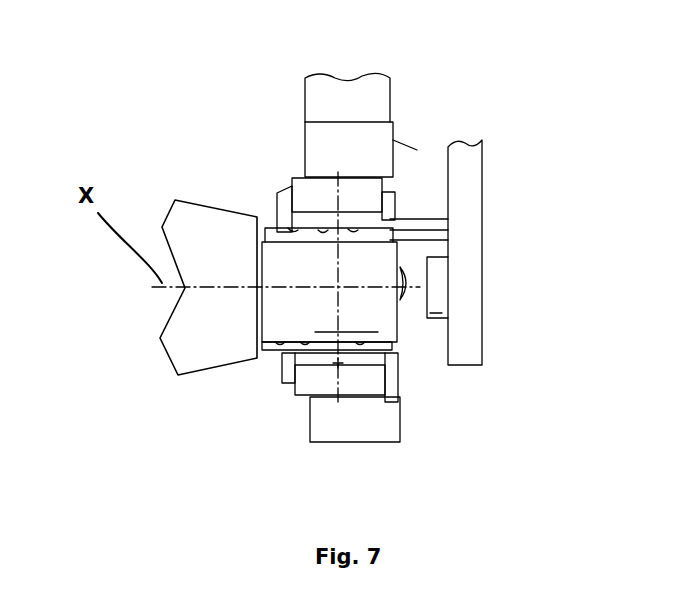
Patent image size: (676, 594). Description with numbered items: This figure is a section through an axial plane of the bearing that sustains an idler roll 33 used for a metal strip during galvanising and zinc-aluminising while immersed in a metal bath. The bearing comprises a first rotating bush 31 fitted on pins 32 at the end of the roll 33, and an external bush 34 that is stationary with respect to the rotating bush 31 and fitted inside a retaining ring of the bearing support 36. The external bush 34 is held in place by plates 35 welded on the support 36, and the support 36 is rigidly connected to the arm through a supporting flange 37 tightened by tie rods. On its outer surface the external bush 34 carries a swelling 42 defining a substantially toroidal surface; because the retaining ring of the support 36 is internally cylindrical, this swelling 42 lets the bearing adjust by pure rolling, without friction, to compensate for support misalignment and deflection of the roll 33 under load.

The first rotating bush 31 is at (290, 338).
The pins 32 is at (368, 268).
The idler roll 33 is at (203, 327).
The external bush 34 is at (370, 353).
The plates 35 is at (283, 205).
The bearing support 36 is at (388, 202).
The supporting flange 37 is at (355, 107).
The swelling 42 is at (340, 363).